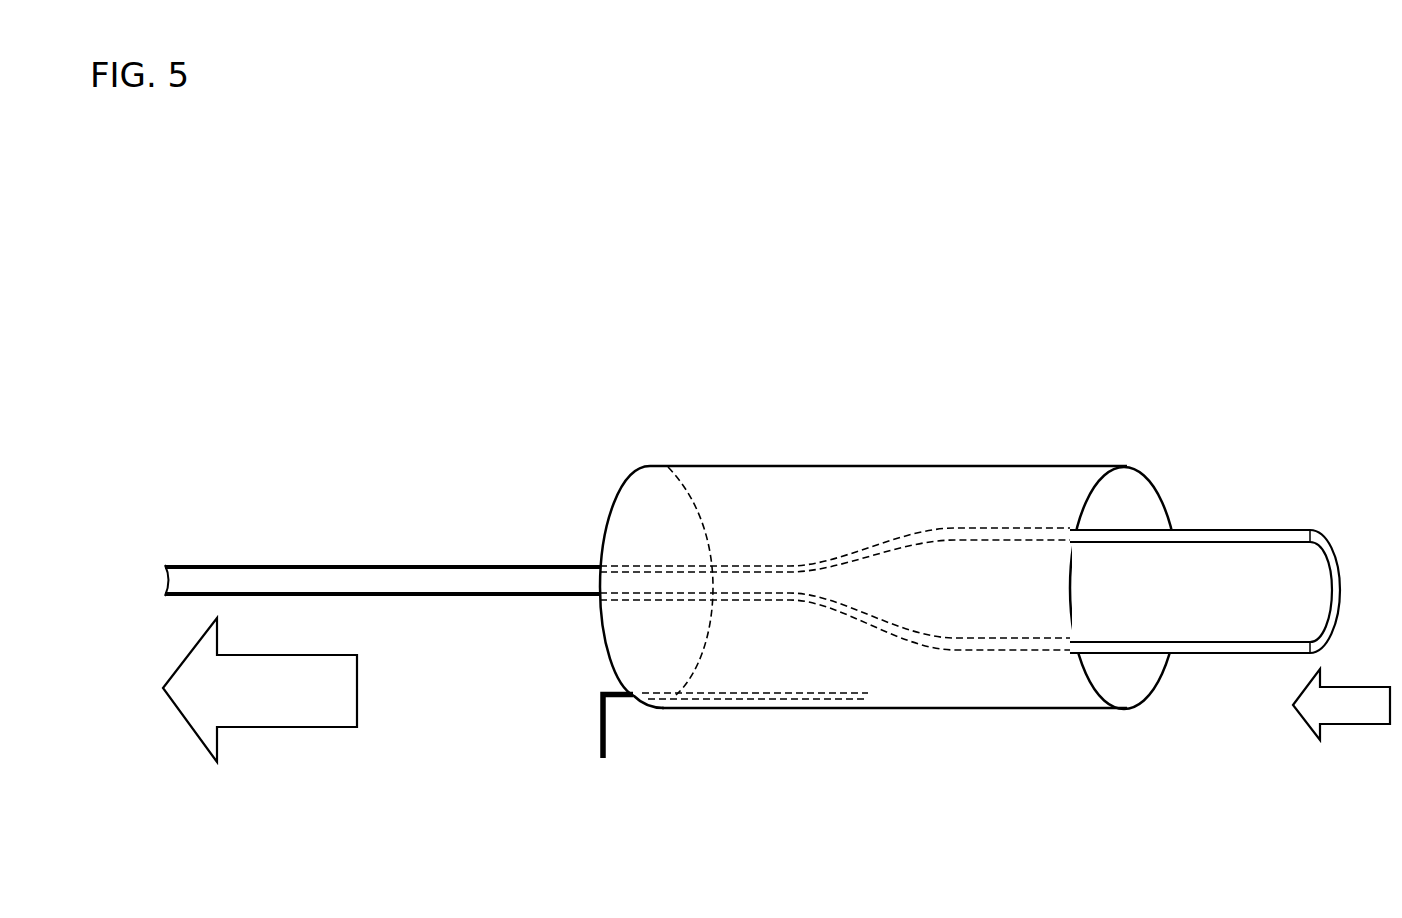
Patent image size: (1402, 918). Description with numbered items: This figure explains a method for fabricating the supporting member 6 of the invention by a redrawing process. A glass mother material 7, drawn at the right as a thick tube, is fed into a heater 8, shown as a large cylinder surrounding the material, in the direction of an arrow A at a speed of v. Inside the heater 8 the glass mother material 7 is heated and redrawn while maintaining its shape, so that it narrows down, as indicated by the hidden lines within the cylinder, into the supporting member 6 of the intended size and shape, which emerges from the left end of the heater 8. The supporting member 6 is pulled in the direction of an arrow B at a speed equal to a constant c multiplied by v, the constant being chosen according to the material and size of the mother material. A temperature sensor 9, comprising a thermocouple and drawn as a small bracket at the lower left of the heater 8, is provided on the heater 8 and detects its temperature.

The supporting member 6 is at (427, 567).
The glass mother material 7 is at (1230, 530).
The heater 8 is at (868, 467).
The temperature sensor 9 is at (608, 733).
The arrow A is at (1358, 724).
The arrow B is at (283, 727).